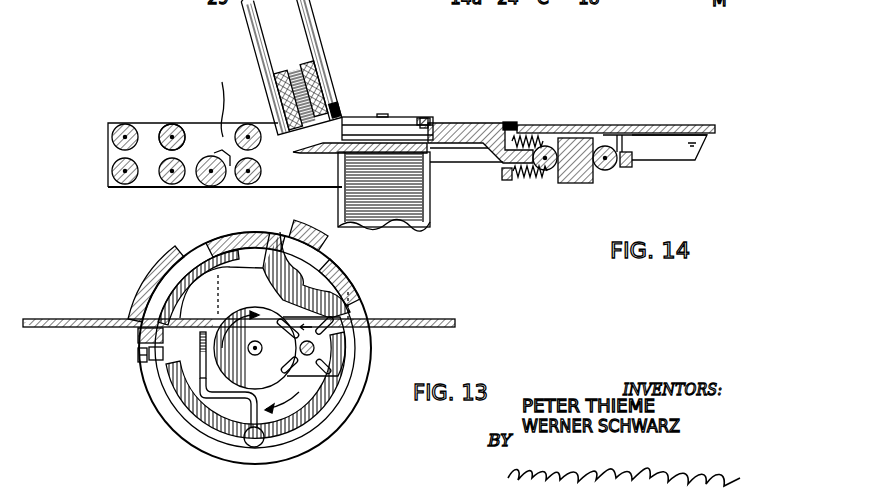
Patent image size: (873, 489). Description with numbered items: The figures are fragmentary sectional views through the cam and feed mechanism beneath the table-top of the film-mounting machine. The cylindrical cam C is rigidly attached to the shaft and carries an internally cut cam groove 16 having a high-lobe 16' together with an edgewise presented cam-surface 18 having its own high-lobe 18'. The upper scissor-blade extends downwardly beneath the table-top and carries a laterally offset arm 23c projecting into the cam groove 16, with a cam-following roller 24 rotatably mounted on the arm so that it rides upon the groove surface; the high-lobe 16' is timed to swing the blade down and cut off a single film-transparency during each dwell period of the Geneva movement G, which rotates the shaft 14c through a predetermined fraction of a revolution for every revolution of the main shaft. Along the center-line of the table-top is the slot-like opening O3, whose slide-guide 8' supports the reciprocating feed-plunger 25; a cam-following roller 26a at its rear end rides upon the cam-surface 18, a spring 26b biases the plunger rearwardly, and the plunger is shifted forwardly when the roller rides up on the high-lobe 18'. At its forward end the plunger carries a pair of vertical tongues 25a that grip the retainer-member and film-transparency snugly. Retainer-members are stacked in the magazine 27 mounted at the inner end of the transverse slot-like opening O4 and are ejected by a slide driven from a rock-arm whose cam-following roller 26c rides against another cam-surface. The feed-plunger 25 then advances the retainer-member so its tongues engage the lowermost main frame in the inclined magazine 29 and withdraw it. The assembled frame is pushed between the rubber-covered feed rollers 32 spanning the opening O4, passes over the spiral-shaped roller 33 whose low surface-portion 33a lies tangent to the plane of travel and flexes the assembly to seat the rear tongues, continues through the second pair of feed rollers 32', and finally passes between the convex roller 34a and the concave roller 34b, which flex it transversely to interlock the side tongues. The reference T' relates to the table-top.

In FIG. 13, the housing flange 8' is at (137, 284).
In FIG. 13, the shaft 14c is at (318, 350).
In FIG. 13, the cam groove 16 is at (342, 346).
In FIG. 13, the high-lobe 16' is at (298, 275).
In FIG. 13, the cam-surface 18 is at (257, 357).
In FIG. 13, the high-lobe 18' is at (298, 225).
In FIG. 13, the laterally offset arm 23c is at (200, 396).
In FIG. 13, the cam-following roller 24 is at (257, 447).
In FIG. 14, the feed-plunger 25 is at (464, 123).
In FIG. 13, the feed-plunger 25 is at (140, 338).
In FIG. 14, the vertical tongues 25a is at (422, 118).
In FIG. 13, the vertical tongues 25a is at (146, 362).
In FIG. 14, the cam-following roller 26a is at (553, 170).
In FIG. 14, the spring 26b is at (546, 137).
In FIG. 14, the cam-following roller 26c is at (614, 170).
In FIG. 14, the magazine 27 is at (425, 207).
In FIG. 14, the magazine 29 is at (246, 12).
In FIG. 14, the feed rollers 32 is at (249, 137).
In FIG. 14, the second pair of feed rollers 32' is at (172, 124).
In FIG. 14, the rubber-surfaced roller 33 is at (211, 156).
In FIG. 14, the low surface-portion 33a is at (229, 162).
In FIG. 14, the feed roller 34a is at (118, 123).
In FIG. 14, the feed roller 34b is at (113, 173).
In FIG. 14, the cylindrical cam C is at (580, 183).
In FIG. 13, the cylindrical cam C is at (343, 430).
In FIG. 13, the Geneva movement G is at (305, 375).
In FIG. 14, the slot-like opening O3 is at (499, 125).
In FIG. 14, the slot-like opening O4 is at (215, 100).
In FIG. 14, the lever T' is at (669, 116).